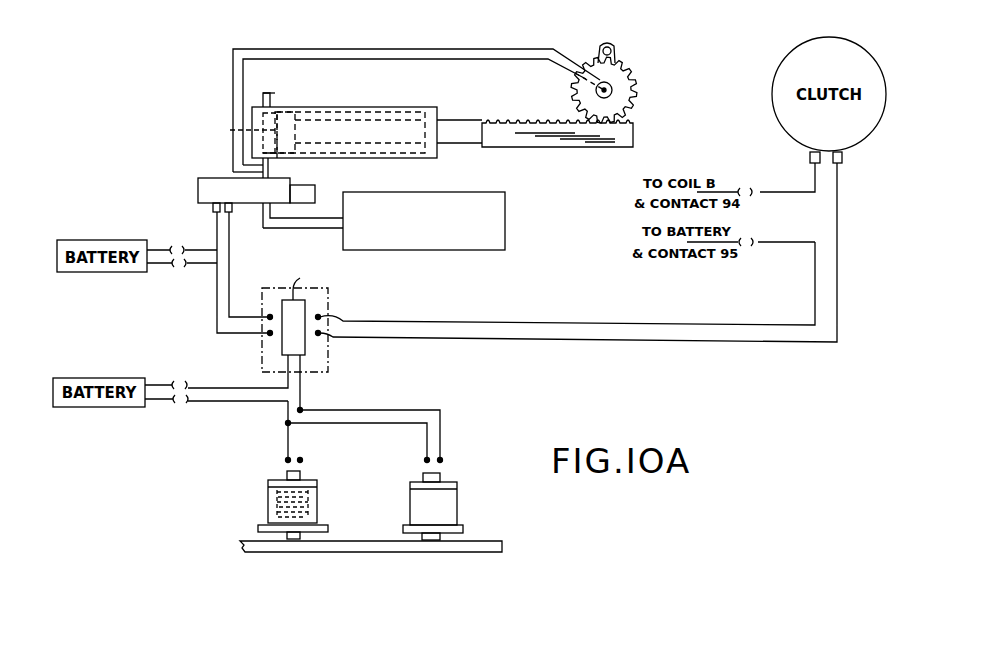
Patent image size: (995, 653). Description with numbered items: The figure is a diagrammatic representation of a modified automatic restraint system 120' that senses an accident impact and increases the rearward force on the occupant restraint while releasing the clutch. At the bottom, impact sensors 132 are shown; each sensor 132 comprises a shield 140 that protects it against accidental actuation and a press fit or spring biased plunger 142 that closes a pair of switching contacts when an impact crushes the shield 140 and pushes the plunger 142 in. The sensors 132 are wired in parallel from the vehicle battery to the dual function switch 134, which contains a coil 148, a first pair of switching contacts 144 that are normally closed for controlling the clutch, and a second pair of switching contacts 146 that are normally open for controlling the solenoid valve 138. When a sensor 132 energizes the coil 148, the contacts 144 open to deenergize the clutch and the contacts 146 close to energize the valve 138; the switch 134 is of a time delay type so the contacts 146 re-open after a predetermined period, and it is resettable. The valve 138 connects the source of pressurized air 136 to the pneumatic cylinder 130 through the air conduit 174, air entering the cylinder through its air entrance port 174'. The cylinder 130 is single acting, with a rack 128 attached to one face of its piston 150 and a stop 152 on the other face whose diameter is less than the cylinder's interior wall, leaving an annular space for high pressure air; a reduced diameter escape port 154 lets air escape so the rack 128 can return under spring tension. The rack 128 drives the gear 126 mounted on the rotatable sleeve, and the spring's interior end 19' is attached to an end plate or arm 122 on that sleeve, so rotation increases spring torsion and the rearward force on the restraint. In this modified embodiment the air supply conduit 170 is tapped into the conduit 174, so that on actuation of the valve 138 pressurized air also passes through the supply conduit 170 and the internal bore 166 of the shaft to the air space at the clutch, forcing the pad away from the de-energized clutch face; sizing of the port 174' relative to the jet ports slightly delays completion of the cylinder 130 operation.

The air supply conduit 170 is at (512, 35).
The interior end of the spring 19' is at (629, 31).
The end plate or arm 122 is at (616, 50).
The internal bore 166 is at (608, 90).
The gear 126 is at (636, 96).
The rack 128 is at (512, 124).
The pneumatic cylinder 130 is at (406, 108).
The piston 150 is at (312, 110).
The stop 152 is at (238, 130).
The escape port 154 is at (292, 90).
The automatic restraint system 120' is at (193, 139).
The solenoid valve 138 is at (218, 179).
The air conduit 174 is at (312, 168).
The air entrance port 174' is at (344, 194).
The source of pressurized air 136 is at (508, 226).
The dual function switch 134 is at (333, 296).
The coil 148 is at (302, 280).
The second pair of switching contacts 146 is at (265, 333).
The first pair of switching contacts 144 is at (322, 332).
The impact sensor 132 is at (265, 493).
The plunger 142 is at (318, 516).
The shield 140 is at (338, 554).